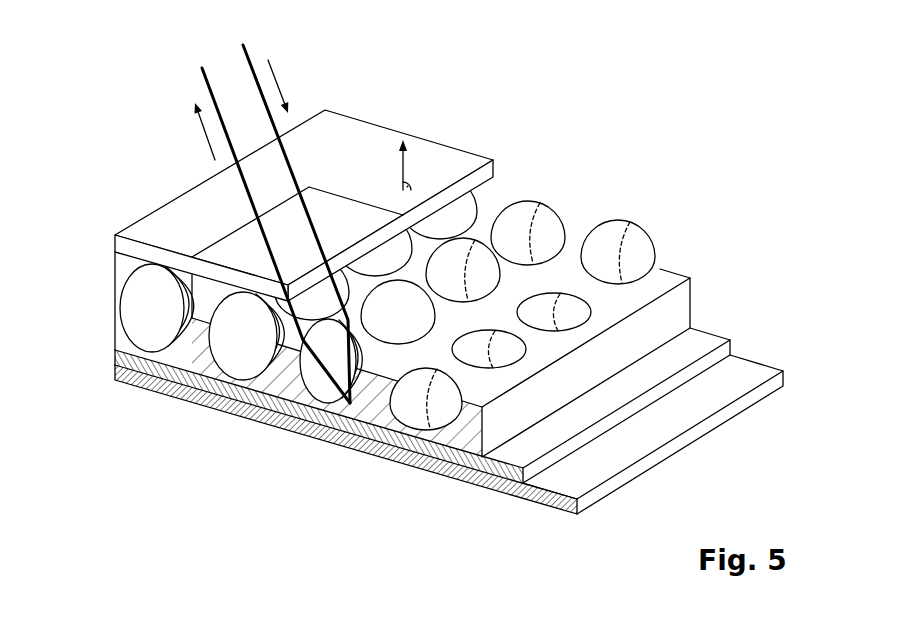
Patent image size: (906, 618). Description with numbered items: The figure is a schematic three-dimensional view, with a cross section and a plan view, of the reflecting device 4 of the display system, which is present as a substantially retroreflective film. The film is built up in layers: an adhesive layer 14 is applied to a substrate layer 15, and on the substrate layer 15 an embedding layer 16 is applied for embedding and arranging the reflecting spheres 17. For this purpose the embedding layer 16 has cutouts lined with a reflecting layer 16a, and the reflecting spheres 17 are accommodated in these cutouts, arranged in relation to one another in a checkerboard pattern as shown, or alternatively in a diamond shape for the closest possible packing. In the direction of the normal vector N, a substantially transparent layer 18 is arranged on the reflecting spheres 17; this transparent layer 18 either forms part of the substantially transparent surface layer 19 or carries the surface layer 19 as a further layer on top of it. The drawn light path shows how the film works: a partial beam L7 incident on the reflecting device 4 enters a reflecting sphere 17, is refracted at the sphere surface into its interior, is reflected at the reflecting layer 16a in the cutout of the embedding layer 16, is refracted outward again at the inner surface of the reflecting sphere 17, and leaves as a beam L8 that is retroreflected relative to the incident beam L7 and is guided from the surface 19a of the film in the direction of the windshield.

The reflecting device 4 is at (421, 261).
The adhesive layer 14 is at (150, 388).
The substrate layer 15 is at (205, 392).
The embedding layer 16 is at (678, 312).
The reflecting layer 16a is at (408, 418).
The reflecting spheres 17 is at (222, 341).
The transparent layer 18 is at (200, 297).
The surface layer 19 is at (492, 168).
The surface 19a is at (338, 157).
The normal vector N is at (405, 178).
The partial beam L7 is at (244, 50).
The beam L8 is at (200, 79).